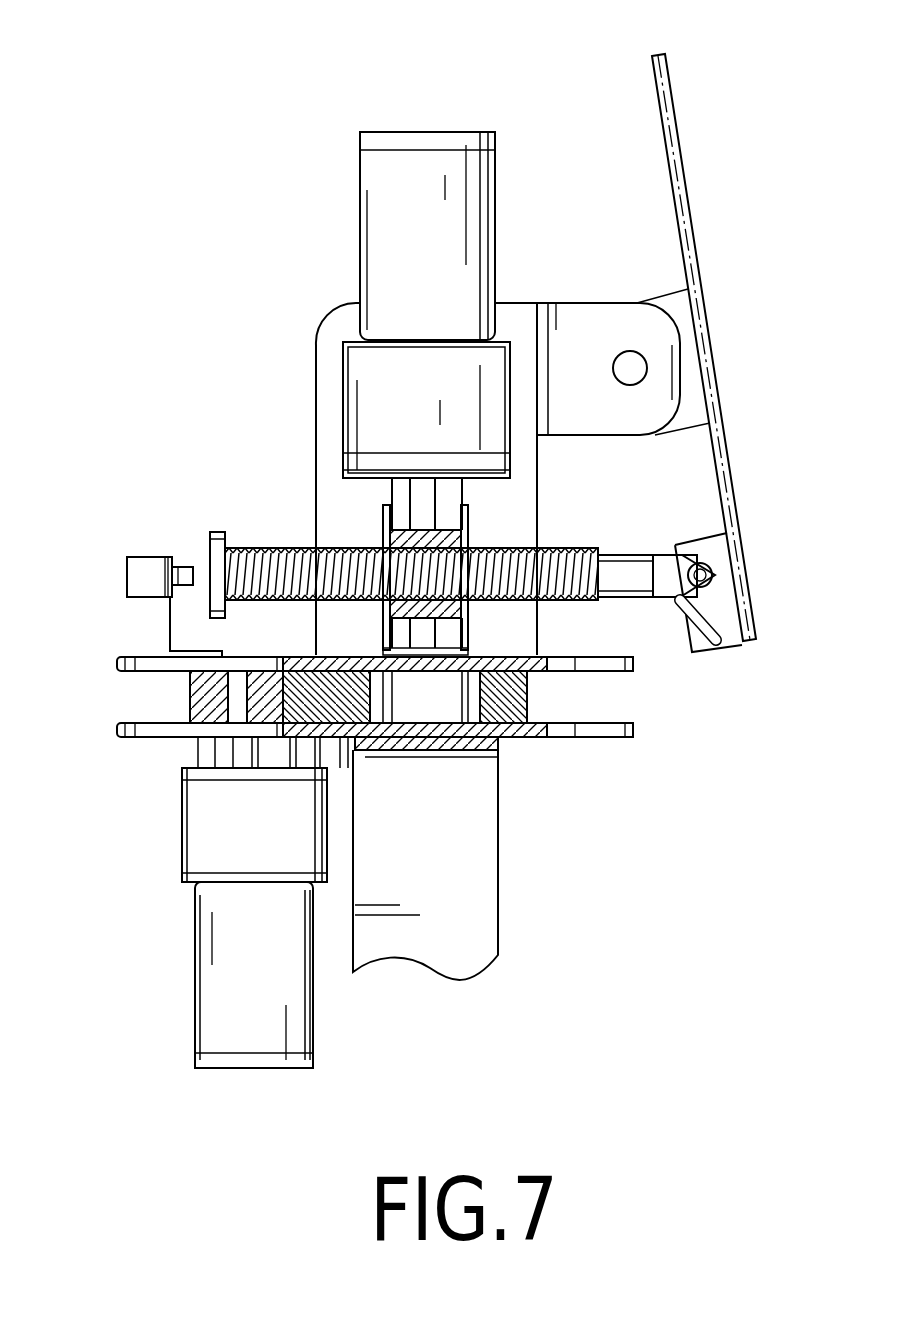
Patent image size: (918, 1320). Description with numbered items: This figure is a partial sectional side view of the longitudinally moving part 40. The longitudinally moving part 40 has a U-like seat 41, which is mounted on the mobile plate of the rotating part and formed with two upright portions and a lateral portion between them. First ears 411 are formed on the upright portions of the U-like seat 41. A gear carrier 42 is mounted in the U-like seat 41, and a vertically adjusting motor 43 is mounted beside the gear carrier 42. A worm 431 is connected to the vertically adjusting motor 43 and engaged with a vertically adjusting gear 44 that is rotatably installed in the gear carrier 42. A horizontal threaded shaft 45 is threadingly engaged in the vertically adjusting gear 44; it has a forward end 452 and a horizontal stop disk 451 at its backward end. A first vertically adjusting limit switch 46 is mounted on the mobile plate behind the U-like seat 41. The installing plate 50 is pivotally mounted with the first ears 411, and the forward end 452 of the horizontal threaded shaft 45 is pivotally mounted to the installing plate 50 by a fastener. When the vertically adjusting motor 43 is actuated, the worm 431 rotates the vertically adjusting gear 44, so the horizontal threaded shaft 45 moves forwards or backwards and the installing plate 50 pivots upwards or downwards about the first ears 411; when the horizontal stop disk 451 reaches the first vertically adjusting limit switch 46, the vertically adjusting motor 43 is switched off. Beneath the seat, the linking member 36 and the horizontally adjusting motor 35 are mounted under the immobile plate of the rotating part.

The longitudinally moving part 40 is at (158, 383).
The U-like seat 41 is at (318, 360).
The first ears 411 is at (598, 305).
The gear carrier 42 is at (382, 512).
The vertically adjusting motor 43 is at (378, 147).
The worm 431 is at (436, 502).
The vertically adjusting gear 44 is at (474, 533).
The horizontal threaded shaft 45 is at (600, 600).
The horizontal stop disk 451 is at (212, 545).
The forward end 452 is at (716, 560).
The first vertically adjusting limit switch 46 is at (142, 588).
The installing plate 50 is at (680, 125).
The horizontally adjusting motor 35 is at (275, 1038).
The linking member 36 is at (496, 847).